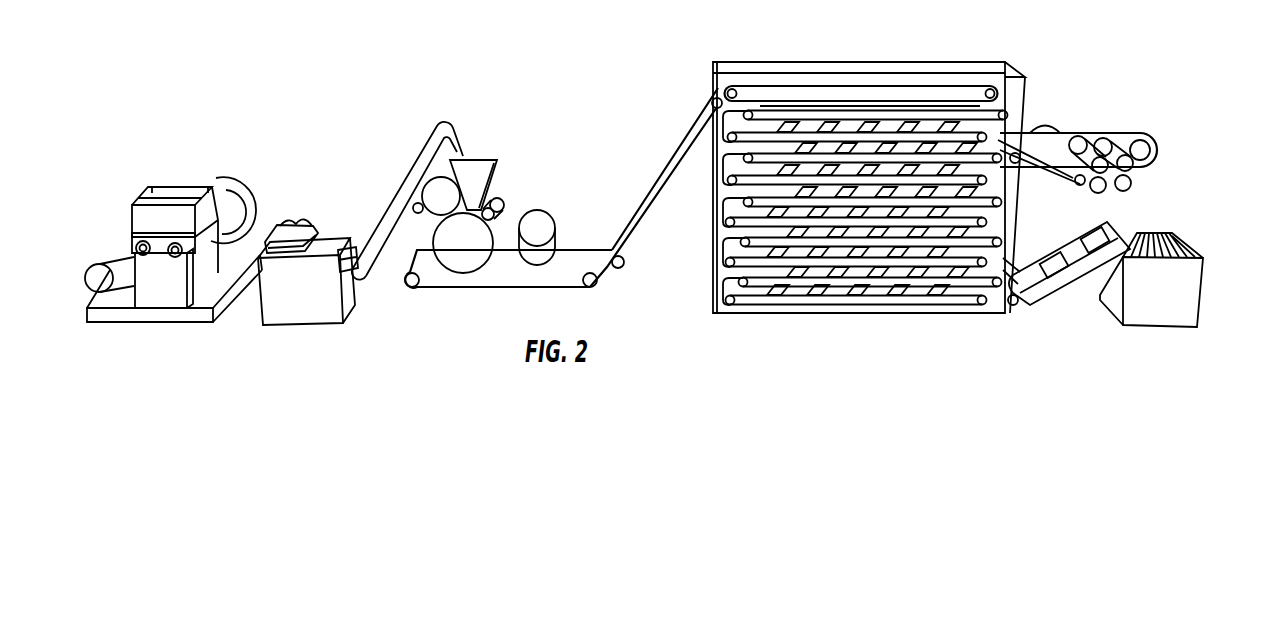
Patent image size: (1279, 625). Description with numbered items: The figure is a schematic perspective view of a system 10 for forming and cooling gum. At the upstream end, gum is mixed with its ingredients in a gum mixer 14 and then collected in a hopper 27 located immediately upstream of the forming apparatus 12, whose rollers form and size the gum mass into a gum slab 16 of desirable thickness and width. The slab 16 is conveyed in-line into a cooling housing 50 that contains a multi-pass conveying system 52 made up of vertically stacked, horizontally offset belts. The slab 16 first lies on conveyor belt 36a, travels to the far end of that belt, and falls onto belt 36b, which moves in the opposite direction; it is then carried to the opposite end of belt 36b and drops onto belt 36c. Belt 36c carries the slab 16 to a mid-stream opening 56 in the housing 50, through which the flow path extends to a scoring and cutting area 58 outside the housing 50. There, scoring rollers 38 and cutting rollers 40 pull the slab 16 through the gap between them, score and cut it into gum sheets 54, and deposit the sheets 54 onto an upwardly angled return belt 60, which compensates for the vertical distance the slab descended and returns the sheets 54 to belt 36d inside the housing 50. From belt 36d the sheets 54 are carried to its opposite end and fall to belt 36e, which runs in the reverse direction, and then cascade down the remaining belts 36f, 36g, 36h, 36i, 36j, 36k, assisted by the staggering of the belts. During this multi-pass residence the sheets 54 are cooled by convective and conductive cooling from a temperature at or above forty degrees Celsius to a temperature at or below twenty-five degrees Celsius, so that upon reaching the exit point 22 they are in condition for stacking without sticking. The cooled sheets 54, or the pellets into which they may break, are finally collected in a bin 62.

The system for forming and cooling gum 10 is at (355, 116).
The gum mixer 14 is at (143, 225).
The hopper 27 is at (480, 150).
The forming apparatus 12 is at (527, 190).
The gum slab 16 is at (580, 260).
The cooling housing 50 is at (890, 70).
The multi-pass conveying system 52 is at (922, 103).
The conveyor belt 36a is at (1003, 108).
The conveyor belt 36b is at (1010, 112).
The conveyor belt 36c is at (730, 140).
The conveyor belt 36d is at (747, 160).
The conveyor belt 36e is at (985, 182).
The conveyor belt 36f is at (1000, 204).
The conveyor belt 36g is at (730, 224).
The conveyor belt 36h is at (745, 246).
The conveyor belt 36i is at (1000, 280).
The conveyor belt 36j is at (985, 300).
The conveyor belt 36k is at (1013, 302).
The gum sheets 54 is at (810, 300).
The mid-stream opening 56 is at (1085, 124).
The scoring and cutting area 58 is at (1150, 136).
The cutting rollers 40 is at (1162, 160).
The scoring rollers 38 is at (1112, 200).
The exit point 22 is at (1016, 268).
The return belt 60 is at (1067, 292).
The bin 62 is at (1190, 295).